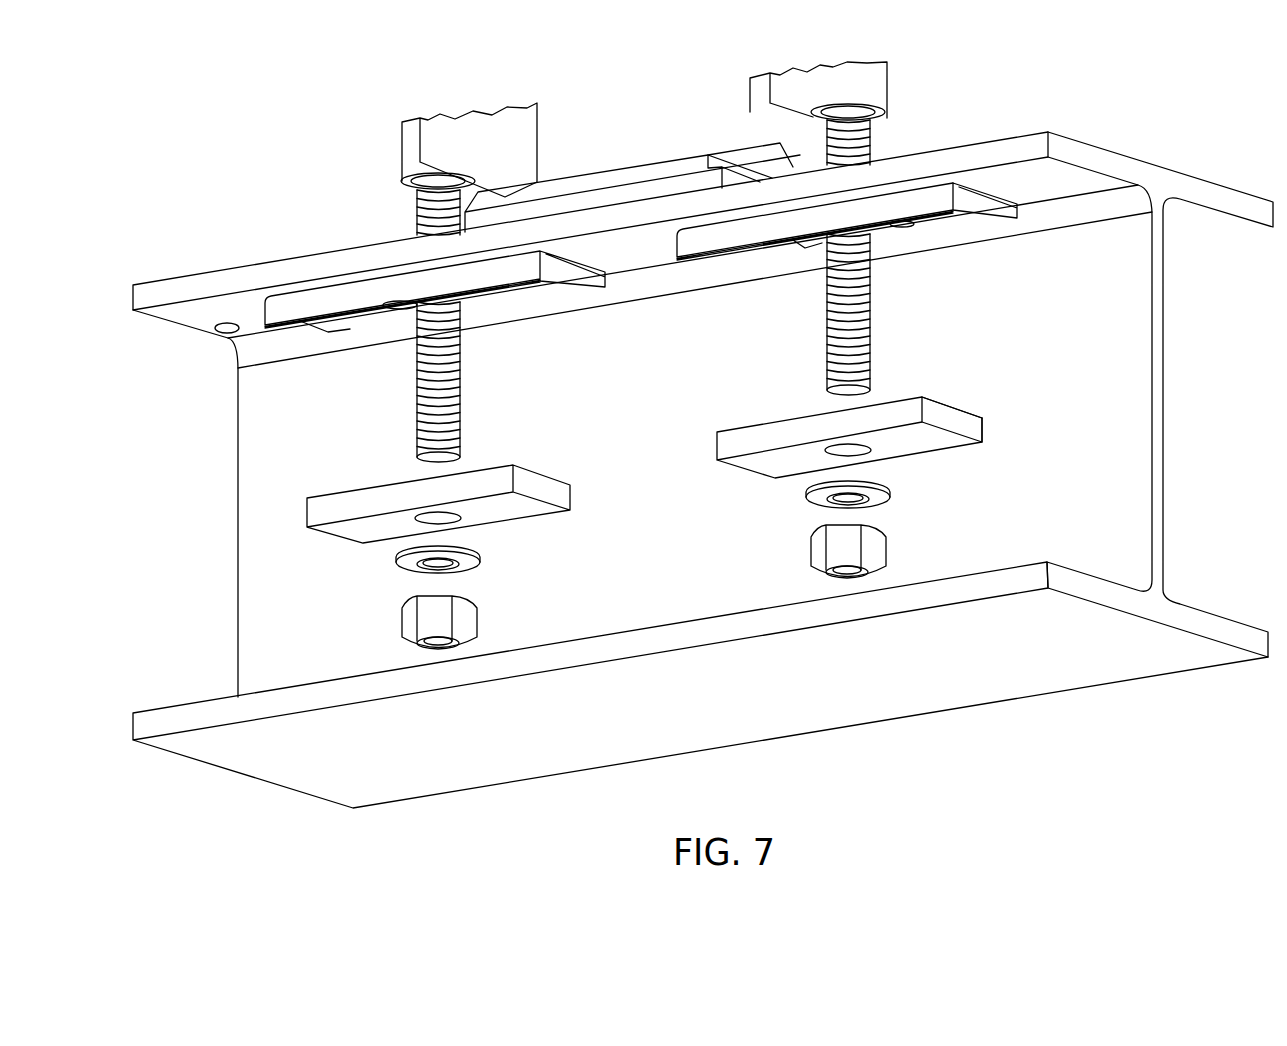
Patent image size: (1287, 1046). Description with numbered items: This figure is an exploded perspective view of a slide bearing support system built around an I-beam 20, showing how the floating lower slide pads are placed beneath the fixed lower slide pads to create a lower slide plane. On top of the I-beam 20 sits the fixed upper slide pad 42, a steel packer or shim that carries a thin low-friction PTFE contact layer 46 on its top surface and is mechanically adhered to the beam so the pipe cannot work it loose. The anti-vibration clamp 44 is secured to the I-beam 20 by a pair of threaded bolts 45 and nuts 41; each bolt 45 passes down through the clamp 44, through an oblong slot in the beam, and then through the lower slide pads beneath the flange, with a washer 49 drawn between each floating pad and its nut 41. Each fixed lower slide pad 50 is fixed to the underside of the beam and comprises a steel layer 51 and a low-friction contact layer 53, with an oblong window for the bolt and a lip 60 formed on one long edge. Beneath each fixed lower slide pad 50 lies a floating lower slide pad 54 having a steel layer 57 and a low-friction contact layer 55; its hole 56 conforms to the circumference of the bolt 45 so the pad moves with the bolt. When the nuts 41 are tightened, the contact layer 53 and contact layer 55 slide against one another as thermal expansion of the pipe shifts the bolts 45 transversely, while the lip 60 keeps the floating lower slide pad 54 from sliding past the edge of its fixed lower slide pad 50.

The I-beam 20 is at (1150, 326).
The nut 41 is at (400, 623).
The fixed upper slide pad 42 is at (697, 180).
The anti-vibration clamp 44 is at (537, 139).
The threaded bolt 45 is at (417, 400).
The contact layer 46 is at (632, 171).
The washer 49 is at (395, 562).
The fixed lower slide pad 50 is at (610, 265).
The steel layer 51 is at (983, 192).
The low-friction contact layer 53 is at (757, 259).
The floating lower slide pad 54 is at (647, 480).
The low-friction contact layer 55 is at (977, 413).
The hole 56 is at (850, 452).
The steel layer 57 is at (975, 430).
The lip 60 is at (928, 212).